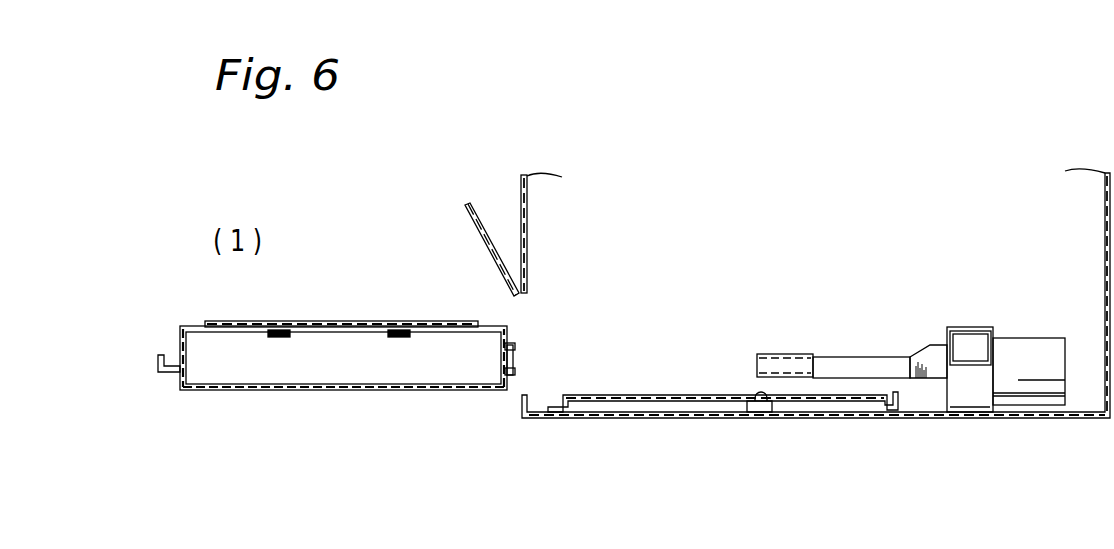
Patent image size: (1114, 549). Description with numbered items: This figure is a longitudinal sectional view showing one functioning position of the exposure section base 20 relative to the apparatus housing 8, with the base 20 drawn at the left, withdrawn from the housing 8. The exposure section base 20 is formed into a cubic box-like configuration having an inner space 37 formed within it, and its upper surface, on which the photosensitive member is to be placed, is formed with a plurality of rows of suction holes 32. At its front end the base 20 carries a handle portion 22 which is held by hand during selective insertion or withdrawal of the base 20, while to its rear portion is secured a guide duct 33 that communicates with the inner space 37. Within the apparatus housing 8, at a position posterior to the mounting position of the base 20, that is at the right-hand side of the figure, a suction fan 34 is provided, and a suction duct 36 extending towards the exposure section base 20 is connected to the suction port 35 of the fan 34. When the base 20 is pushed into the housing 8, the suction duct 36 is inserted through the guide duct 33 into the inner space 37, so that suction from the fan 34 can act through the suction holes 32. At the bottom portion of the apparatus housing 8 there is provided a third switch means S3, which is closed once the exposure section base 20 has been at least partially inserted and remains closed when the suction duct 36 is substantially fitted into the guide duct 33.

The apparatus housing 8 is at (1020, 418).
The exposure section base 20 is at (275, 390).
The handle portion 22 is at (168, 373).
The suction holes 32 is at (372, 322).
The guide duct 33 is at (515, 345).
The suction fan 34 is at (973, 350).
The suction port 35 is at (928, 358).
The suction duct 36 is at (843, 362).
The inner space 37 is at (363, 372).
The third switch means S3 is at (757, 405).